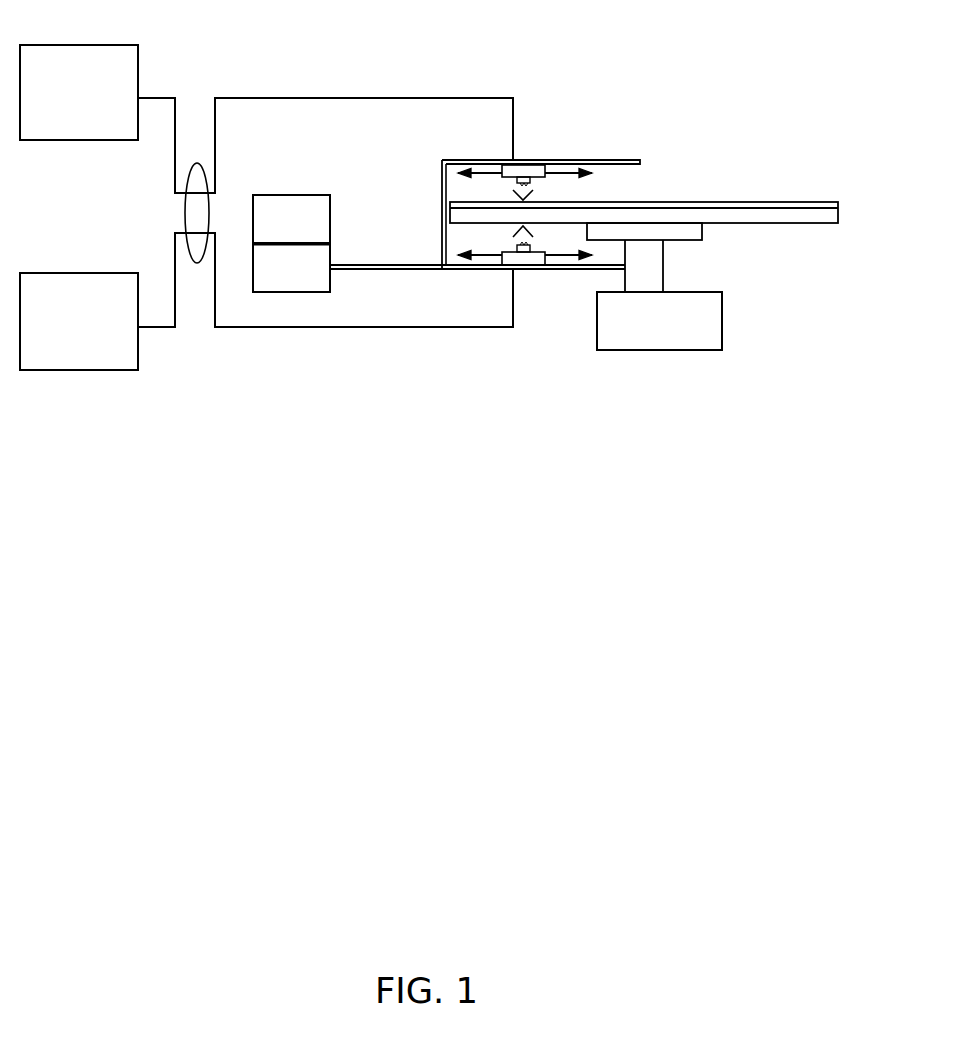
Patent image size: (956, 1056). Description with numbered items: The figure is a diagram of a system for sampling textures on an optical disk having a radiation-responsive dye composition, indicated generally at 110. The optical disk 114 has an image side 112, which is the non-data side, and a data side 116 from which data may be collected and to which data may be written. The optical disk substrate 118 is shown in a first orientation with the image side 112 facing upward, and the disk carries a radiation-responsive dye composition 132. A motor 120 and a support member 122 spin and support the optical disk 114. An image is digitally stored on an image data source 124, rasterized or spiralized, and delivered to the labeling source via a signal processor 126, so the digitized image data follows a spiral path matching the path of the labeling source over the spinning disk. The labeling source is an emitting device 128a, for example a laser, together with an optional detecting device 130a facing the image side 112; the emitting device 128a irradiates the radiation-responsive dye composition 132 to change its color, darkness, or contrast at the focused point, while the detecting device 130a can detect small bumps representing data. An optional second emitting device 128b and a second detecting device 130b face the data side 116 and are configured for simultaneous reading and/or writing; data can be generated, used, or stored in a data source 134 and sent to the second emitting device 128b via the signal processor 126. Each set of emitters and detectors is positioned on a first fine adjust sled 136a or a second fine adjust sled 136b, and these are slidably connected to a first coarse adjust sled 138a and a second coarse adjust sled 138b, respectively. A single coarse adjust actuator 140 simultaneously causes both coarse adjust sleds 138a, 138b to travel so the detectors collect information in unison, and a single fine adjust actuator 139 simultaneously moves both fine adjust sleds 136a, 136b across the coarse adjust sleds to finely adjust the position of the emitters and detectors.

The system for sampling textures on an optical disk 110 is at (754, 60).
The image side 112 is at (766, 199).
The optical disk 114 is at (684, 179).
The data side 116 is at (775, 225).
The optical disk substrate 118 is at (841, 224).
The motor 120 is at (639, 331).
The support member 122 is at (673, 231).
The image data source 124 is at (59, 72).
The signal processor 126 is at (192, 263).
The emitting device 128a is at (518, 183).
The second emitting device 128b is at (516, 246).
The detecting device 130a is at (533, 184).
The second detecting device 130b is at (532, 247).
The radiation-responsive dye composition 132 is at (840, 205).
The data source 134 is at (59, 331).
The first fine adjust sled 136a is at (516, 184).
The second fine adjust sled 136b is at (505, 256).
The first coarse adjust sled 138a is at (520, 176).
The second coarse adjust sled 138b is at (520, 253).
The fine adjust actuator 139 is at (272, 232).
The coarse adjust actuator 140 is at (272, 286).